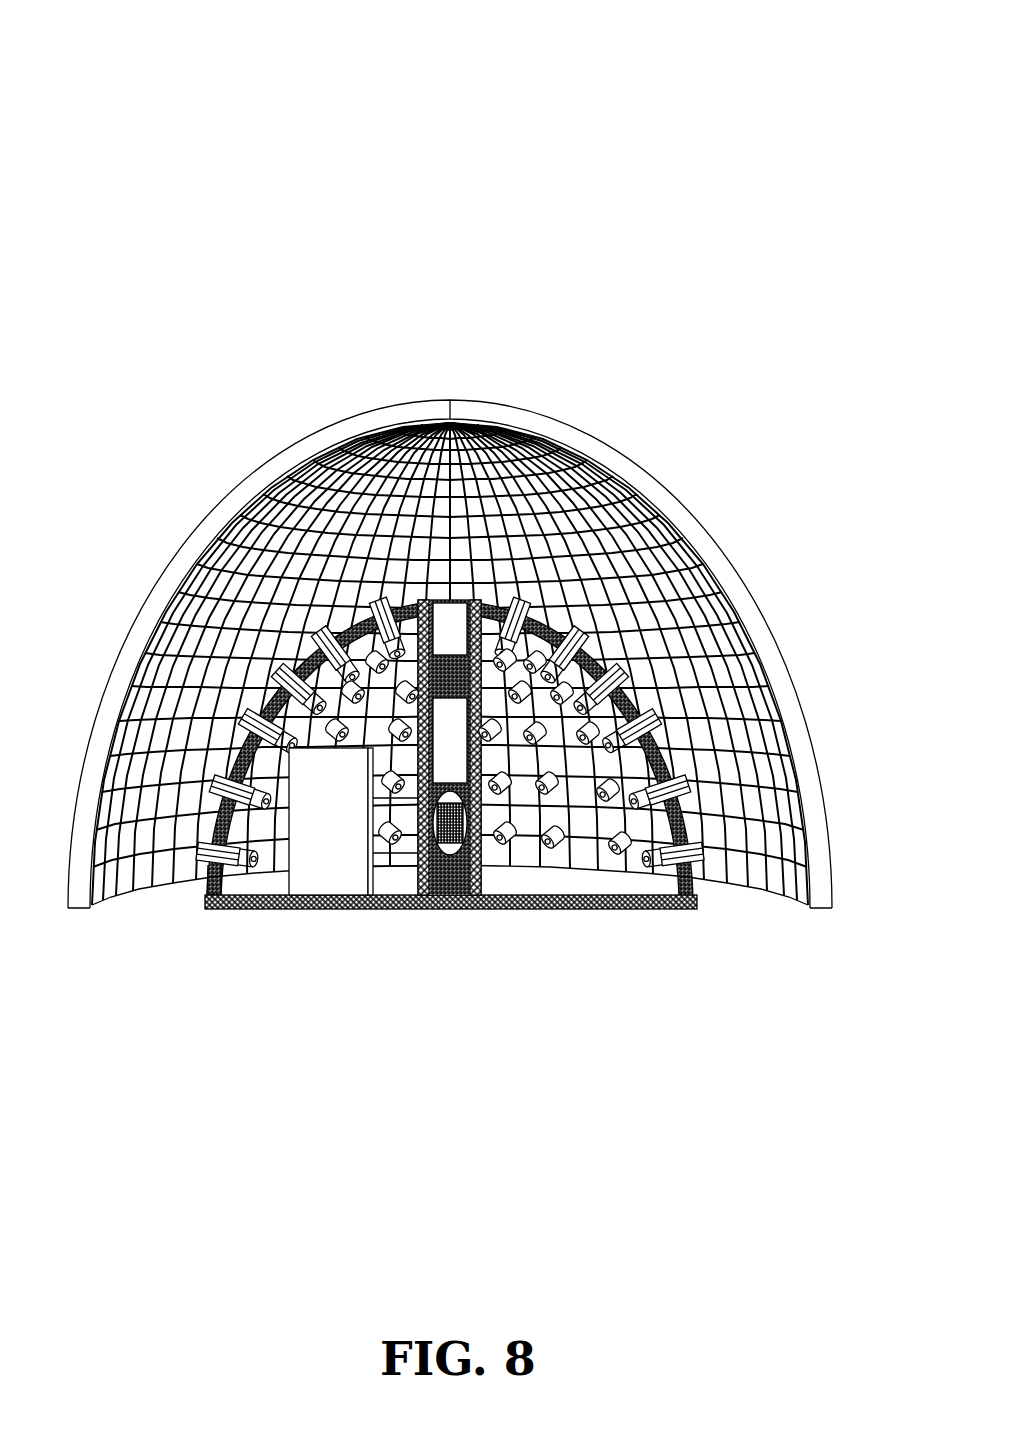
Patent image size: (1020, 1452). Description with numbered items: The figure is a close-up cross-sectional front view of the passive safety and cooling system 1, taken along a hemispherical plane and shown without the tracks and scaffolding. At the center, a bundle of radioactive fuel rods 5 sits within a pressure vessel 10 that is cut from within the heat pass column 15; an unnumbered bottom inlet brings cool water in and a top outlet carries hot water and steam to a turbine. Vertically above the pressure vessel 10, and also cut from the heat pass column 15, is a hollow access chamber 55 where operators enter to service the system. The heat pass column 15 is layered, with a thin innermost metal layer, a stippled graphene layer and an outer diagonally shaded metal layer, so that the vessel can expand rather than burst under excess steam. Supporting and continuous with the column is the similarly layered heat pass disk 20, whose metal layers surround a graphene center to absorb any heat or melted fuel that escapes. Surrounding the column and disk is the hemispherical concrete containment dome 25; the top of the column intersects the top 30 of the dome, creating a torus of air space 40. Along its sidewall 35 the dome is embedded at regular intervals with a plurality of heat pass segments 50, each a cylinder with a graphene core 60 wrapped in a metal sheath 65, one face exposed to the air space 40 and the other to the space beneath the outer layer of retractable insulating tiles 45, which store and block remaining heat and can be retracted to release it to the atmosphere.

The passive safety and cooling system 1 is at (465, 512).
The bundle of radioactive fuel rods 5 is at (450, 856).
The pressure vessel 10 is at (476, 846).
The heat pass column 15 is at (405, 813).
The heat pass disk 20 is at (566, 913).
The concrete containment dome 25 is at (362, 628).
The top of containment dome 30 is at (305, 668).
The sidewall of containment dome 35 is at (655, 758).
The torus of air space 40 is at (587, 880).
The layer of retractable insulating tiles 45 is at (100, 887).
The heat pass segment 50 is at (231, 872).
The hollow access chamber 55 is at (443, 763).
The graphene core 60 is at (208, 860).
The metal sheath 65 is at (212, 850).